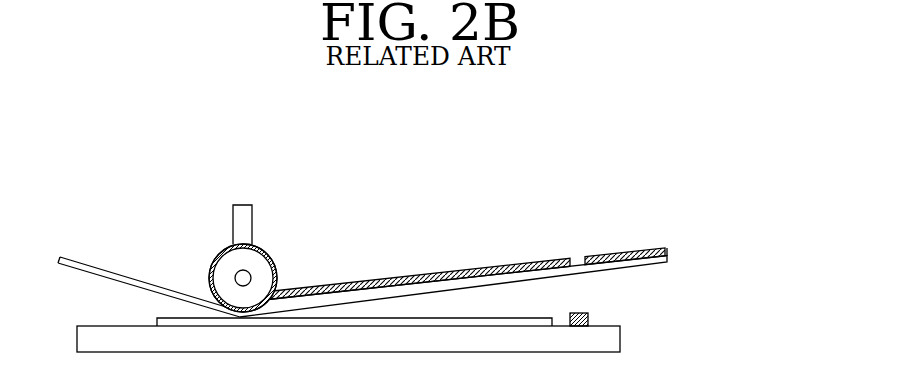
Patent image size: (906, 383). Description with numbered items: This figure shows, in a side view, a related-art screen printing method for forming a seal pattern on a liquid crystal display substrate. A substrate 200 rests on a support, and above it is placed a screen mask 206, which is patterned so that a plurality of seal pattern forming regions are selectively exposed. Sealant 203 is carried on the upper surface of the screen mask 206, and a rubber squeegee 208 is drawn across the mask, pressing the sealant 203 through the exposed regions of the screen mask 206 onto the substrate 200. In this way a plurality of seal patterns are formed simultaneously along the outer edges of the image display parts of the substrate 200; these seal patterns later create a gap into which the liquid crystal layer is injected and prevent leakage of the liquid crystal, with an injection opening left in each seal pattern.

The substrate 200 is at (607, 342).
The screen mask 206 is at (666, 257).
The sealant 203 is at (630, 252).
The rubber squeegee 208 is at (255, 262).